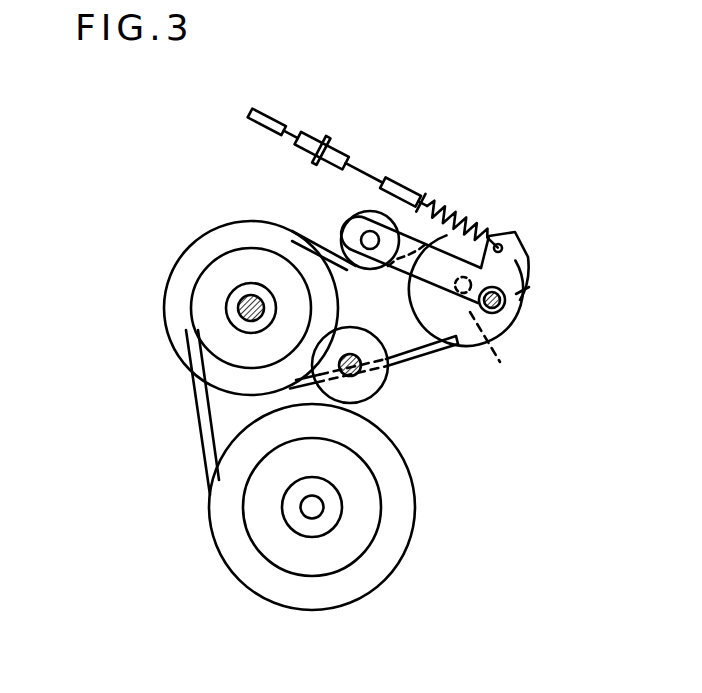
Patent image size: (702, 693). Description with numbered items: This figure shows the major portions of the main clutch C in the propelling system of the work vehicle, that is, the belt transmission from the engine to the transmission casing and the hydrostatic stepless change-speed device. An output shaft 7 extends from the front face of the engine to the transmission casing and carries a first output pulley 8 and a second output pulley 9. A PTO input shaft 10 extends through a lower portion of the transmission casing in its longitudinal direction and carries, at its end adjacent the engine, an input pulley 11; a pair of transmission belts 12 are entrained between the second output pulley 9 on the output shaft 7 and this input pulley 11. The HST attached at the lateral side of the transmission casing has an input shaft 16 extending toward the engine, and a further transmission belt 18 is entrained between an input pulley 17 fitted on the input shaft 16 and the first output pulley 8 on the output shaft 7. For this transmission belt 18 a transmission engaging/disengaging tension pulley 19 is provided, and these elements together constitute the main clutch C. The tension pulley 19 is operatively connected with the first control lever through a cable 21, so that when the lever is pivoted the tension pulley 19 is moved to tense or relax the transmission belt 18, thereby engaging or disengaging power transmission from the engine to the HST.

The output shaft 7 is at (238, 308).
The first output pulley 8 is at (183, 352).
The second output pulley 9 is at (210, 273).
The PTO input shaft 10 is at (305, 516).
The input pulley 11 is at (406, 512).
The transmission belts 12 is at (200, 428).
The input shaft 16 is at (505, 365).
The input pulley 17 is at (516, 290).
The transmission belt 18 is at (417, 352).
The tension pulley 19 is at (346, 228).
The cable 21 is at (282, 138).
The main clutch C is at (462, 185).